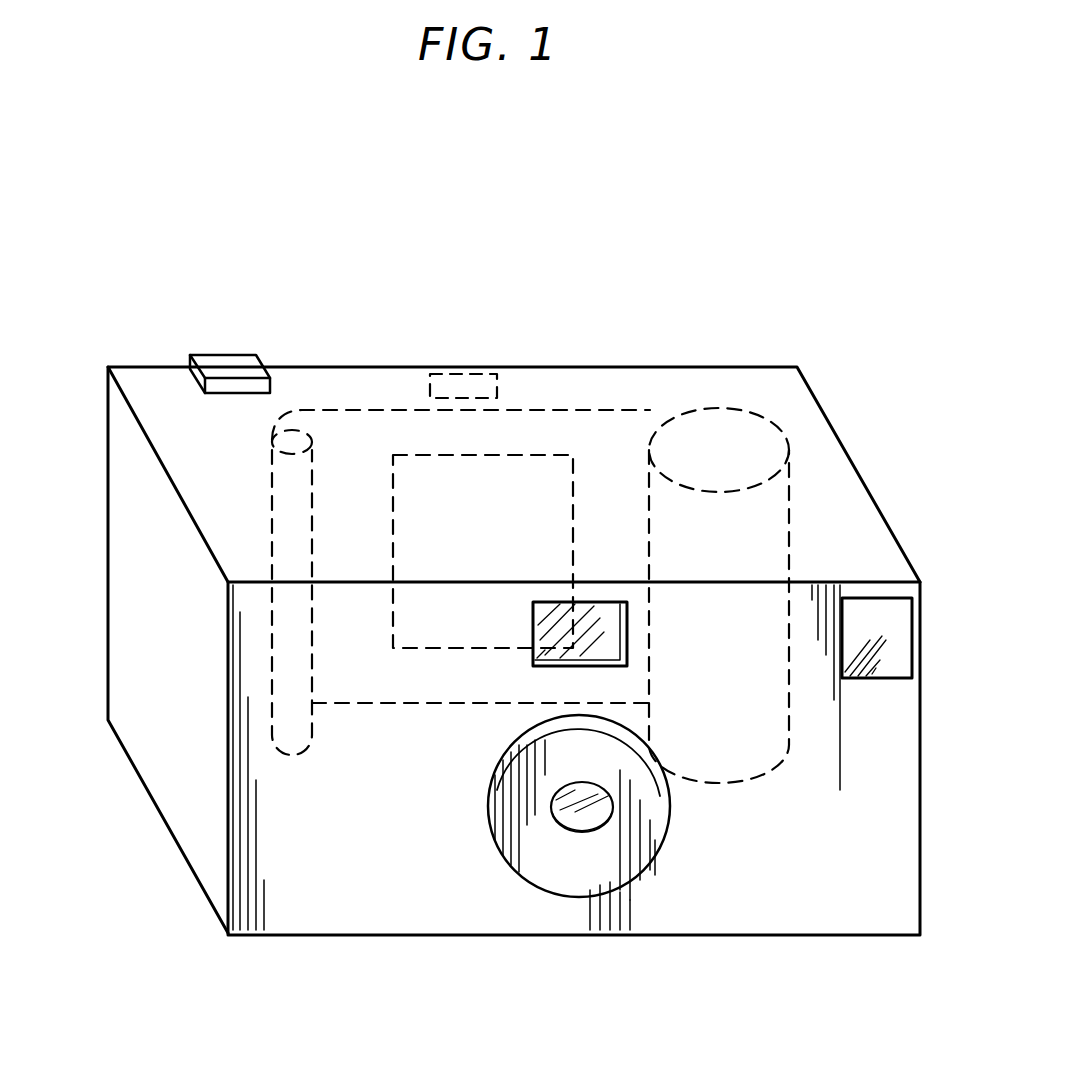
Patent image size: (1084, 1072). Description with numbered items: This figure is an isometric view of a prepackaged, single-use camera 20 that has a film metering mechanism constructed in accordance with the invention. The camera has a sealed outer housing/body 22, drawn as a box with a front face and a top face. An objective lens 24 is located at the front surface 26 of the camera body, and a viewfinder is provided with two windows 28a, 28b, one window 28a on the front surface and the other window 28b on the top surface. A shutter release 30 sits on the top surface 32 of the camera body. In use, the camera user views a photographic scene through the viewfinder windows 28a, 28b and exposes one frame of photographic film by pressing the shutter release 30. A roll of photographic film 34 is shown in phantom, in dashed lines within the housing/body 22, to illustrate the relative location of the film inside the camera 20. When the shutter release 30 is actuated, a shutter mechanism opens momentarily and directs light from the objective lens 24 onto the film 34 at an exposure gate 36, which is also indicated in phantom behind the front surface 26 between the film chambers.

The camera 20 is at (772, 262).
The outer housing/body 22 is at (762, 936).
The objective lens 24 is at (506, 818).
The front surface 26 is at (858, 866).
The viewfinder window 28a is at (603, 630).
The viewfinder window 28b is at (466, 382).
The shutter release 30 is at (231, 364).
The top surface 32 is at (224, 460).
The roll of photographic film 34 is at (616, 416).
The exposure gate 36 is at (410, 458).